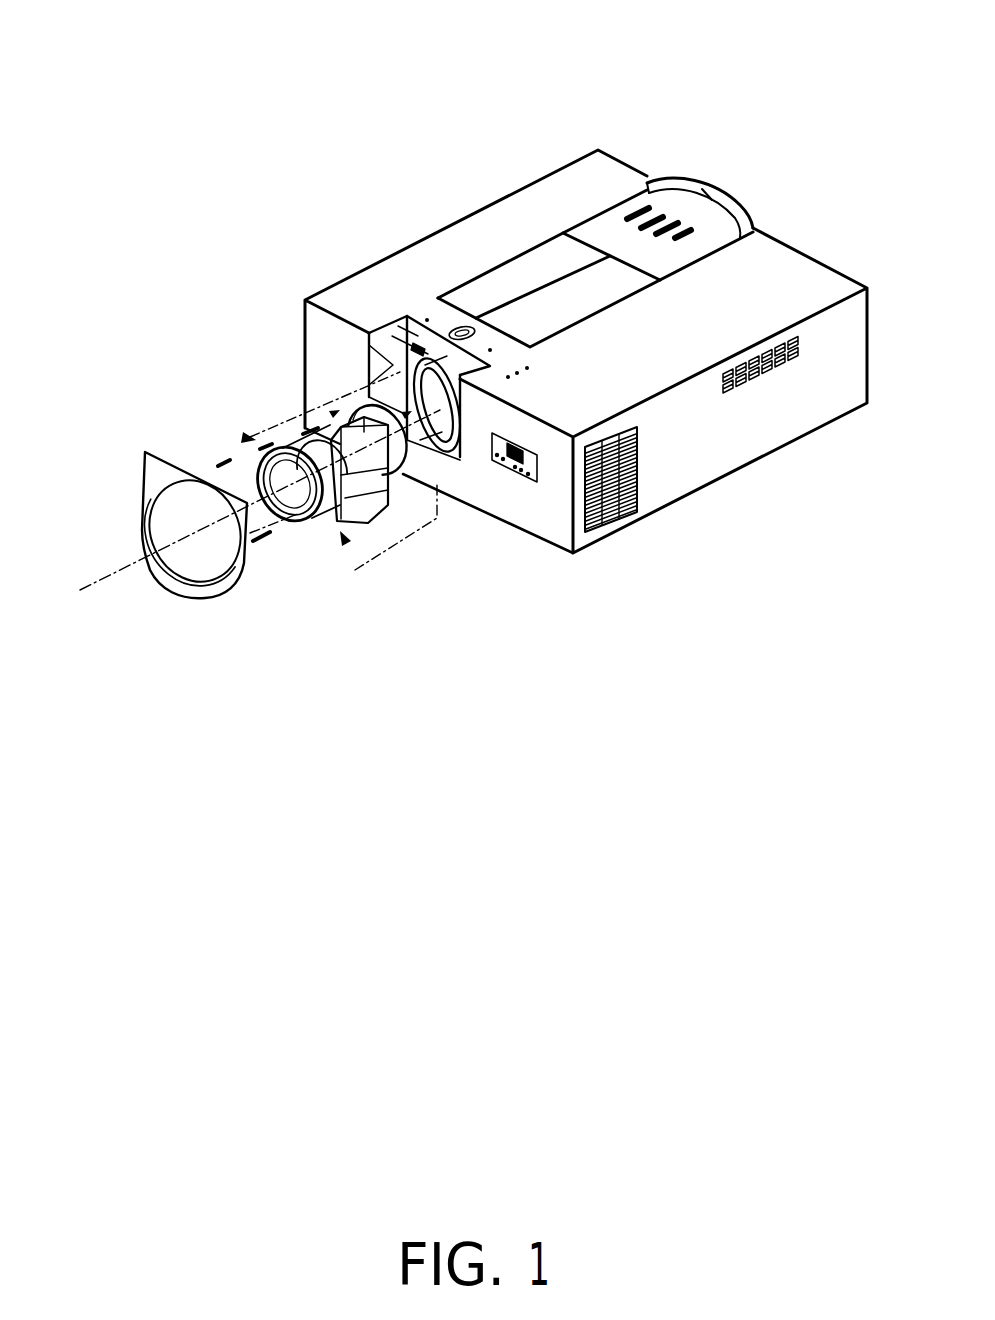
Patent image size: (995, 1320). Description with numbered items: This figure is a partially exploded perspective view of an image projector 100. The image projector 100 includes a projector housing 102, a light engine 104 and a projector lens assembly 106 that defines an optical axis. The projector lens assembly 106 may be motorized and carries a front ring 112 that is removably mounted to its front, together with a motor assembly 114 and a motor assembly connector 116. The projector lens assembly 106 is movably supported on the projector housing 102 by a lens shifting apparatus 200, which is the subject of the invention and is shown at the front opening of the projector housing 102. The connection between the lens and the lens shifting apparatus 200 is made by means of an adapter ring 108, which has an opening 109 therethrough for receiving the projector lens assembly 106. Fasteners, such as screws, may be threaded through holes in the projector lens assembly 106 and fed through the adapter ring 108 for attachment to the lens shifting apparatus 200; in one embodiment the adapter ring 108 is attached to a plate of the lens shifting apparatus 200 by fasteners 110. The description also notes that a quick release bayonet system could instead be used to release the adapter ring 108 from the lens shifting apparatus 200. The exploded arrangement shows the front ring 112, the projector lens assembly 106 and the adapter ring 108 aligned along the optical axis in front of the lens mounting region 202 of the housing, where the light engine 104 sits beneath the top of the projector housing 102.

The image projector 100 is at (455, 334).
The projector housing 102 is at (365, 285).
The light engine 104 is at (593, 293).
The projector lens assembly 106 is at (290, 497).
The adapter ring 108 is at (350, 420).
The opening 109 is at (332, 410).
The fasteners 110 is at (243, 438).
The front ring 112 is at (215, 592).
The motor assembly 114 is at (300, 429).
The motor assembly connector 116 is at (345, 538).
The lens shifting apparatus 200 is at (397, 333).
The lens mount 202 is at (450, 423).